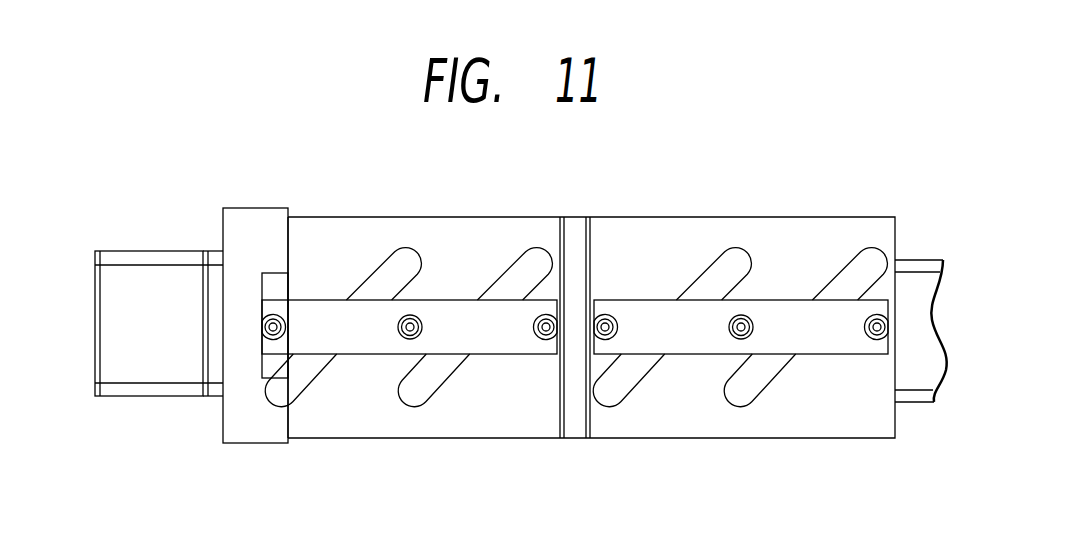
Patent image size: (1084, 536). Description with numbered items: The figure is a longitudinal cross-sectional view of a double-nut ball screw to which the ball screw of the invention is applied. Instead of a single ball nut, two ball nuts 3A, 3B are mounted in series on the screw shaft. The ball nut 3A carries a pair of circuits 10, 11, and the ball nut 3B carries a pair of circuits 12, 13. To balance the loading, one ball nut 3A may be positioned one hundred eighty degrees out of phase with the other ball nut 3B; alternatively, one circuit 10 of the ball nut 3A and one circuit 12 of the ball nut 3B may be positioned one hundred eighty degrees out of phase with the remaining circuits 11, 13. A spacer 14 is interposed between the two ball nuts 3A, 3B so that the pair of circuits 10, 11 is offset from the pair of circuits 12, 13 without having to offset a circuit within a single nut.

The ball nut 3A is at (325, 224).
The ball nut 3B is at (637, 227).
The circuit 10 is at (411, 252).
The circuit 11 is at (540, 252).
The circuit 12 is at (742, 252).
The circuit 13 is at (875, 254).
The spacer 14 is at (572, 432).